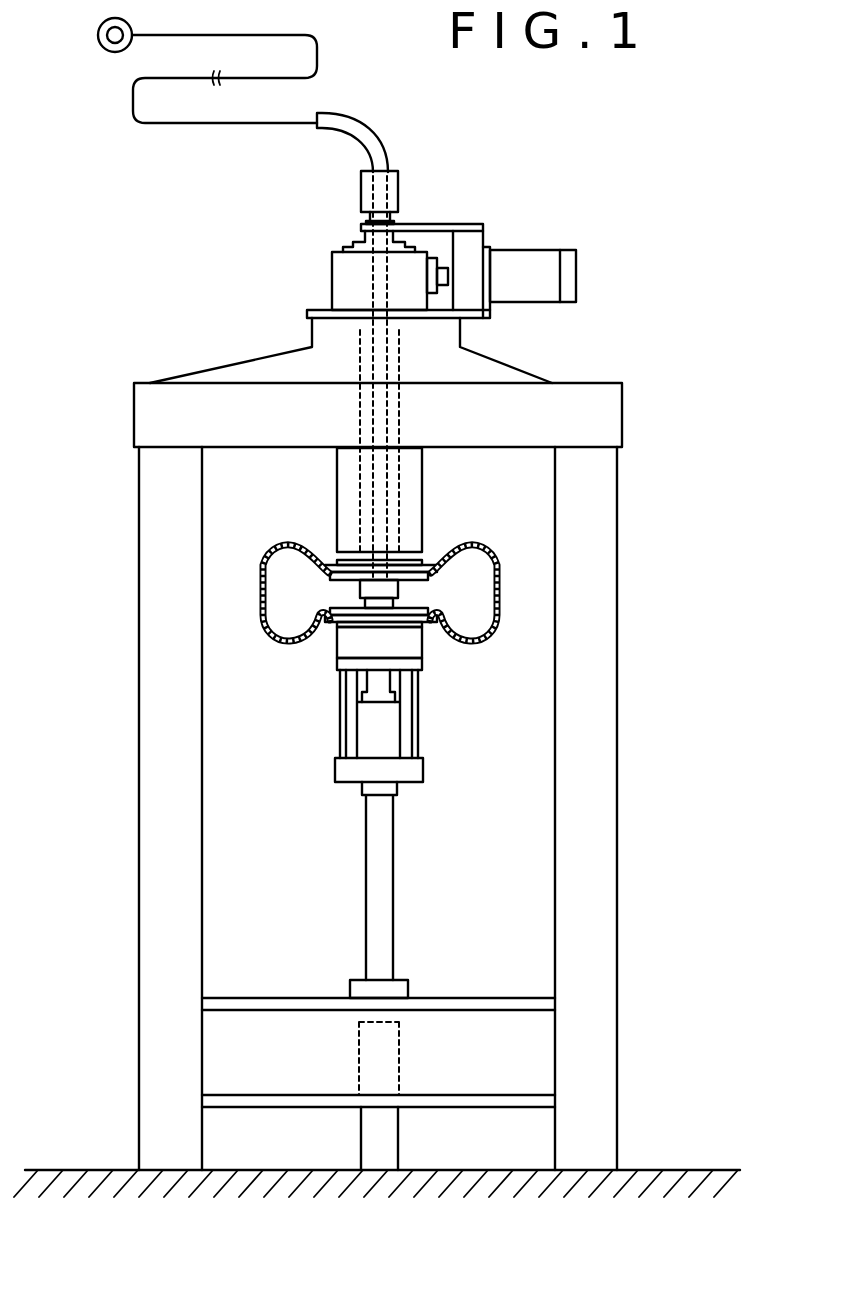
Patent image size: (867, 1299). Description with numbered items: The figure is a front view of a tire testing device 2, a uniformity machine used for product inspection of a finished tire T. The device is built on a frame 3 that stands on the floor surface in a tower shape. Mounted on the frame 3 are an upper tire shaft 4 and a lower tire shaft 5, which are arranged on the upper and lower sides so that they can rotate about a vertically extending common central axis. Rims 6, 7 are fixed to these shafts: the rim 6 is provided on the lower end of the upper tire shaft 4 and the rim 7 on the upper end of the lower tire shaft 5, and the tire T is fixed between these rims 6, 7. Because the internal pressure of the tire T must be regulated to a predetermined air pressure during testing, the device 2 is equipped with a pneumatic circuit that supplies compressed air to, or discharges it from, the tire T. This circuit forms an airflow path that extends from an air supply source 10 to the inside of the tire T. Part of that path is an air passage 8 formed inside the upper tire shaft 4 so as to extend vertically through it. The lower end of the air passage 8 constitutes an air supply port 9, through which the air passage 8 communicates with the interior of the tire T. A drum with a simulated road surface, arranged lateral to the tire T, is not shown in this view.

The tire testing device 2 is at (598, 218).
The frame 3 is at (598, 540).
The upper tire shaft 4 is at (352, 362).
The lower tire shaft 5 is at (382, 683).
The rim 6 is at (429, 567).
The rim 7 is at (427, 625).
The air passage 8 is at (400, 183).
The air supply port 9 is at (360, 584).
The air supply source 10 is at (97, 35).
The tire T is at (485, 550).